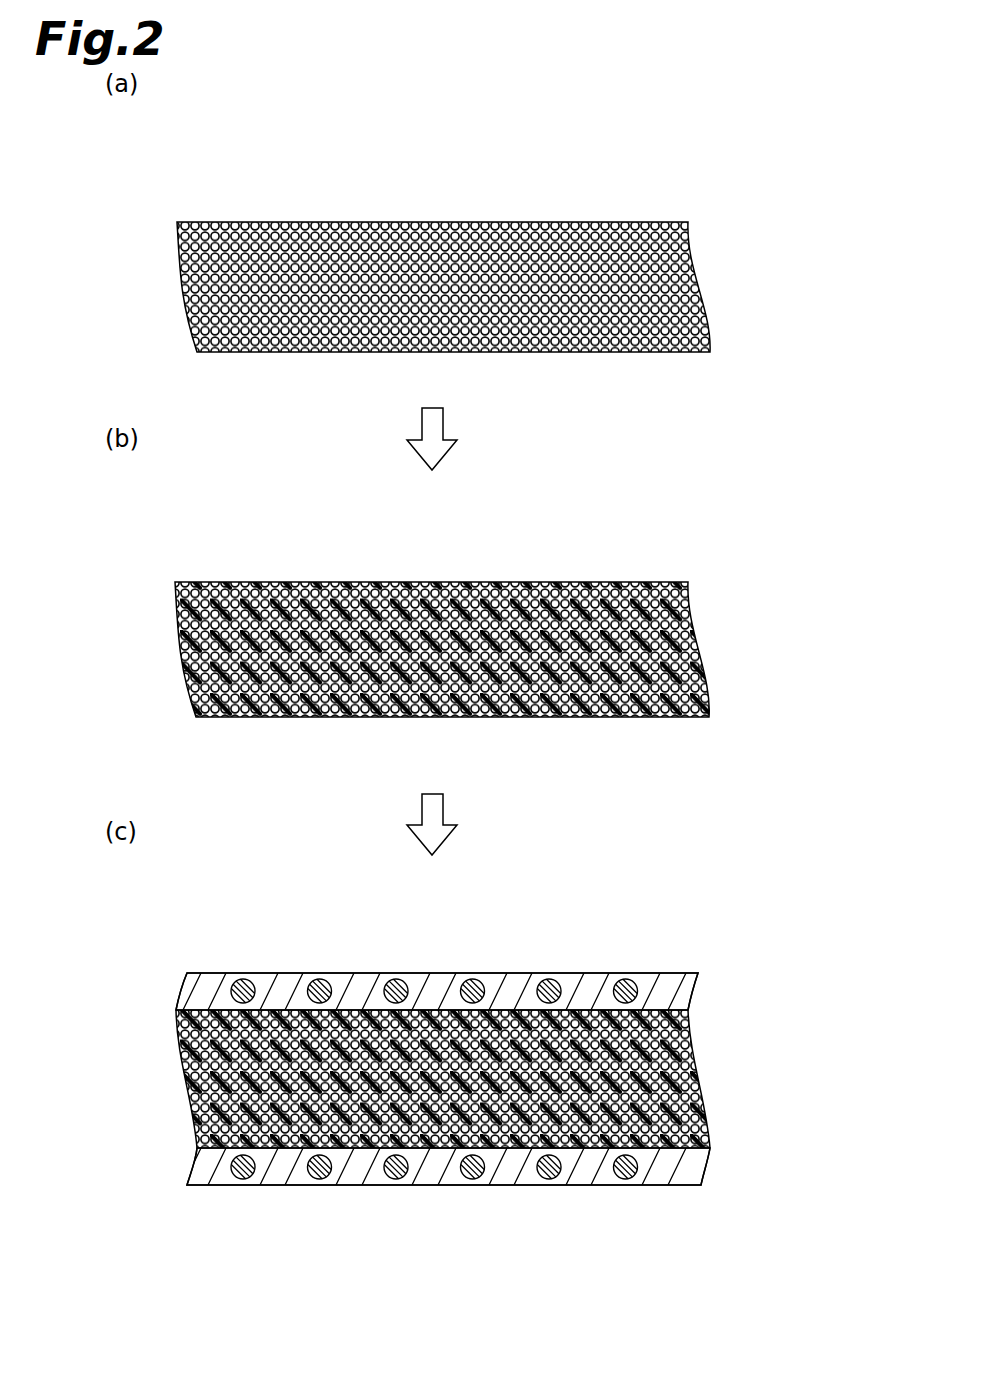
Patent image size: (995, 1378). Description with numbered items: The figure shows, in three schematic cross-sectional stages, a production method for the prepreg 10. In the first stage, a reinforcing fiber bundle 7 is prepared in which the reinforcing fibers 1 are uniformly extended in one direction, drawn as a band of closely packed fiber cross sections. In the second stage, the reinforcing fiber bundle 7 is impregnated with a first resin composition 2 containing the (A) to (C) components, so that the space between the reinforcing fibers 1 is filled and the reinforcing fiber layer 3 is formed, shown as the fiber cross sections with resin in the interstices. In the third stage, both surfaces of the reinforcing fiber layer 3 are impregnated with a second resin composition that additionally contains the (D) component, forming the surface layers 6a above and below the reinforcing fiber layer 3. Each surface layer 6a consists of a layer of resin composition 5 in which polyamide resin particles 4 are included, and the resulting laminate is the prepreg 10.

The reinforcing fibers 1 is at (283, 221).
The resin composition 2 is at (467, 581).
The reinforcing fiber layer 3 is at (695, 531).
The polyamide resin particles 4 is at (243, 982).
The resin composition 5 is at (291, 980).
The surface layer 6a is at (305, 926).
The reinforcing fiber bundle 7 is at (695, 149).
The prepreg 10 is at (695, 925).